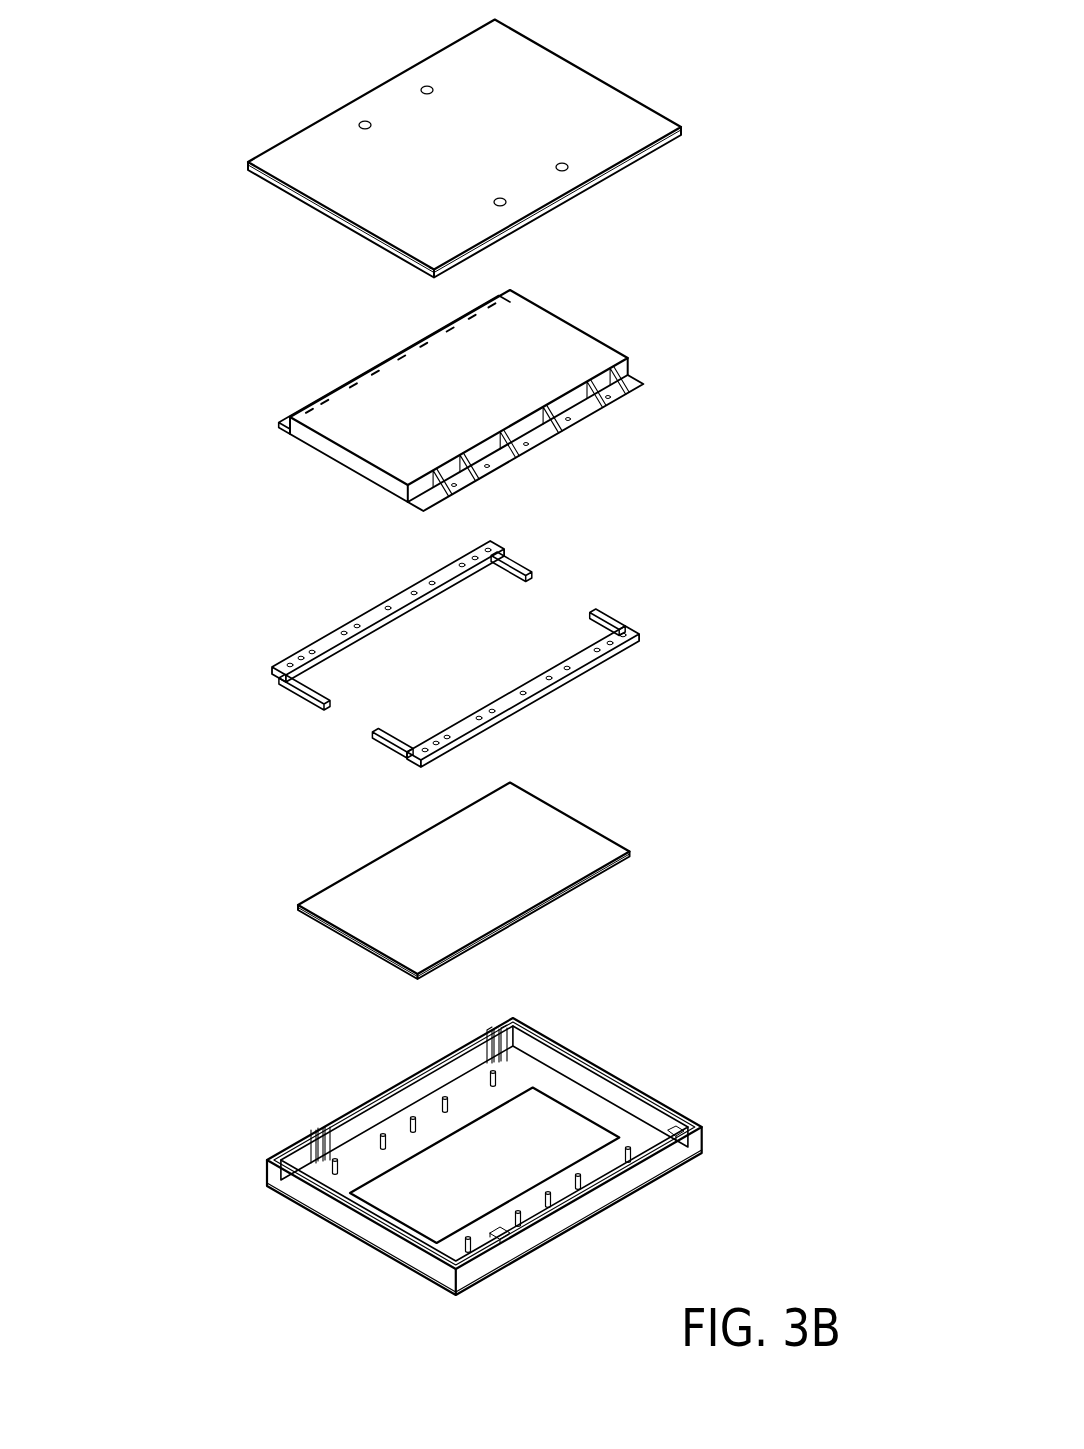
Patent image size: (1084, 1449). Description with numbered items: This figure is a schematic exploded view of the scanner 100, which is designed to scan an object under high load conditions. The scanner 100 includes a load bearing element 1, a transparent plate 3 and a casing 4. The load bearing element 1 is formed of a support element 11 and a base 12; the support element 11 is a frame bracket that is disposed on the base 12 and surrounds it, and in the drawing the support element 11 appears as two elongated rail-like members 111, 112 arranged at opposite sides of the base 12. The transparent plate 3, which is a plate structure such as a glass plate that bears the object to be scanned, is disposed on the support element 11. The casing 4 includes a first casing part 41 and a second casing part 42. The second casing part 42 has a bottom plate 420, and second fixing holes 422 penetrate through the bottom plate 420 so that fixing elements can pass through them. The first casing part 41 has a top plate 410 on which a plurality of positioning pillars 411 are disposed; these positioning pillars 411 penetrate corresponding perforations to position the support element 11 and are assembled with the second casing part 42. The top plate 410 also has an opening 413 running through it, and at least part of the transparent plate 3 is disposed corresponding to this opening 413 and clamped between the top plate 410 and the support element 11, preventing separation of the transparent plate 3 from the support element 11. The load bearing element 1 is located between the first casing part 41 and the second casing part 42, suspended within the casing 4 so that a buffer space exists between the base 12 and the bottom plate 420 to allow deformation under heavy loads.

The scanner 100 is at (834, 67).
The load bearing element 1 is at (827, 427).
The support element 11 is at (763, 485).
The first fixing rail 111 is at (498, 548).
The second fixing rail 112 is at (627, 633).
The base 12 is at (567, 360).
The transparent plate 3 is at (557, 827).
The casing 4 is at (101, 357).
The first casing part 41 is at (302, 1195).
The top plate 410 is at (598, 1108).
The positioning pillar 411 is at (383, 1133).
The opening 413 is at (547, 1127).
The second casing part 42 is at (272, 208).
The bottom plate 420 is at (483, 70).
The second fixing hole 422 is at (363, 117).